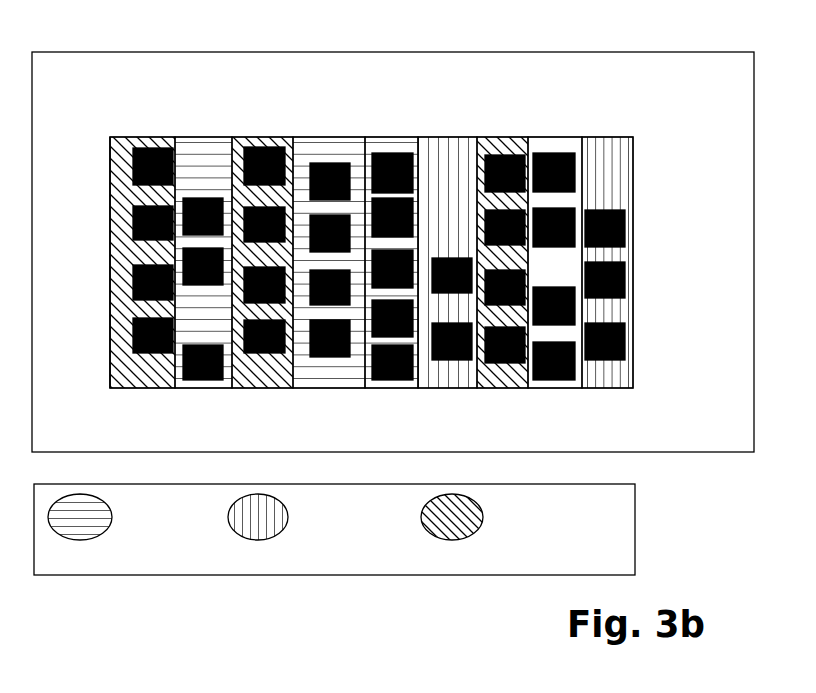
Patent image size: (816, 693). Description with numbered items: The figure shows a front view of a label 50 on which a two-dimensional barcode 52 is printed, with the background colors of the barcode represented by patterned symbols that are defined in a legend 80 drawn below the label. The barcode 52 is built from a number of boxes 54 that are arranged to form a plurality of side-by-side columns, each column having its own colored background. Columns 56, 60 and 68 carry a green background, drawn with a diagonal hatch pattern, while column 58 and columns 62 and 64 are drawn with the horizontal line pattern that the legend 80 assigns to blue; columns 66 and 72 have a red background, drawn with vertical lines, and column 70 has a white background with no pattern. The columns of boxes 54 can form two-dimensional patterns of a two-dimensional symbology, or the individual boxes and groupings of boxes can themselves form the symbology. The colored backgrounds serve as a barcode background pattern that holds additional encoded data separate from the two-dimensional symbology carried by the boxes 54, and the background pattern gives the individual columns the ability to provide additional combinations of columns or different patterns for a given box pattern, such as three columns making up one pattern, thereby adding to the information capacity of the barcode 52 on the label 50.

The label 50 is at (675, 34).
The two-dimensional barcode 52 is at (122, 108).
The boxes 54 is at (113, 177).
The column 56 is at (138, 137).
The column 58 is at (196, 388).
The column 60 is at (262, 137).
The column 62 is at (318, 388).
The column 64 is at (385, 137).
The column 66 is at (450, 388).
The column 68 is at (492, 137).
The column 70 is at (563, 388).
The column 72 is at (607, 137).
The legend 80 is at (653, 503).